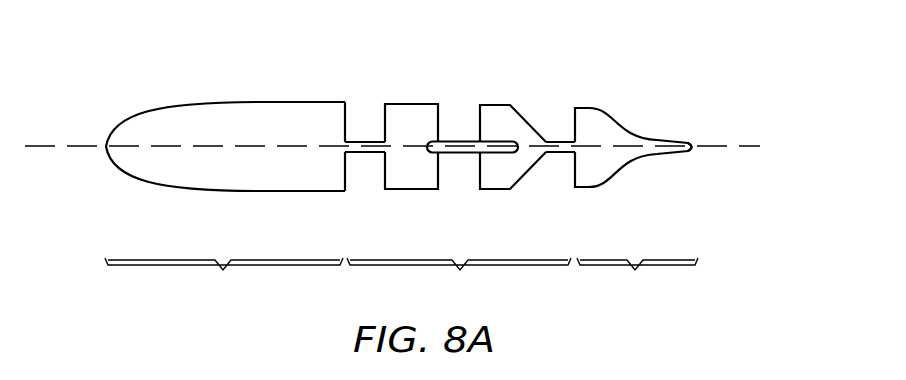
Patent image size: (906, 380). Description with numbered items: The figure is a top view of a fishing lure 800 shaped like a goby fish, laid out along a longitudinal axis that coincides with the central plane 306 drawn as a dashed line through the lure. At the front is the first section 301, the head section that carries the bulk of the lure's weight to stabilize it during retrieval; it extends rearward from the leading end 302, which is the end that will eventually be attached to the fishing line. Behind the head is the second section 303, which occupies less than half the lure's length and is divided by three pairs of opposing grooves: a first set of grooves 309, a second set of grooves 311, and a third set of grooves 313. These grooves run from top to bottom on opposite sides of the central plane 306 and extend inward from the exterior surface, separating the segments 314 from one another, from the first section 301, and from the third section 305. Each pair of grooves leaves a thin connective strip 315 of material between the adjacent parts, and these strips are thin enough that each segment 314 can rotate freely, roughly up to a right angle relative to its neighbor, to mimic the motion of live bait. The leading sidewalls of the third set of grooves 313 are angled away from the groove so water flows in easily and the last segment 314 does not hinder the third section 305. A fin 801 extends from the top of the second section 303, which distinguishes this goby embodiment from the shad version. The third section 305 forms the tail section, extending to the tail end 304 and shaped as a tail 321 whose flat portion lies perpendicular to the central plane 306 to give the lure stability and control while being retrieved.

The fishing lure 800 is at (313, 63).
The first section 301 is at (195, 202).
The leading end 302 is at (107, 139).
The second section 303 is at (499, 168).
The tail end 304 is at (695, 150).
The third section 305 is at (660, 194).
The central plane 306 is at (753, 145).
The first set of grooves 309 is at (366, 180).
The second set of grooves 311 is at (459, 180).
The third set of grooves 313 is at (558, 178).
The segment 314 is at (405, 103).
The connective strip 315 is at (363, 141).
The tail 321 is at (660, 139).
The fin 801 is at (503, 153).